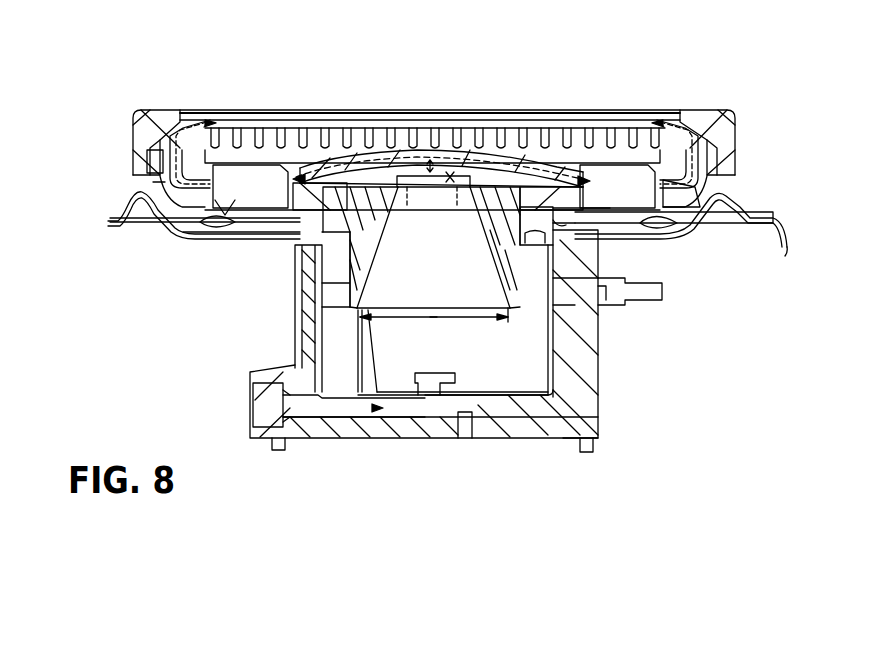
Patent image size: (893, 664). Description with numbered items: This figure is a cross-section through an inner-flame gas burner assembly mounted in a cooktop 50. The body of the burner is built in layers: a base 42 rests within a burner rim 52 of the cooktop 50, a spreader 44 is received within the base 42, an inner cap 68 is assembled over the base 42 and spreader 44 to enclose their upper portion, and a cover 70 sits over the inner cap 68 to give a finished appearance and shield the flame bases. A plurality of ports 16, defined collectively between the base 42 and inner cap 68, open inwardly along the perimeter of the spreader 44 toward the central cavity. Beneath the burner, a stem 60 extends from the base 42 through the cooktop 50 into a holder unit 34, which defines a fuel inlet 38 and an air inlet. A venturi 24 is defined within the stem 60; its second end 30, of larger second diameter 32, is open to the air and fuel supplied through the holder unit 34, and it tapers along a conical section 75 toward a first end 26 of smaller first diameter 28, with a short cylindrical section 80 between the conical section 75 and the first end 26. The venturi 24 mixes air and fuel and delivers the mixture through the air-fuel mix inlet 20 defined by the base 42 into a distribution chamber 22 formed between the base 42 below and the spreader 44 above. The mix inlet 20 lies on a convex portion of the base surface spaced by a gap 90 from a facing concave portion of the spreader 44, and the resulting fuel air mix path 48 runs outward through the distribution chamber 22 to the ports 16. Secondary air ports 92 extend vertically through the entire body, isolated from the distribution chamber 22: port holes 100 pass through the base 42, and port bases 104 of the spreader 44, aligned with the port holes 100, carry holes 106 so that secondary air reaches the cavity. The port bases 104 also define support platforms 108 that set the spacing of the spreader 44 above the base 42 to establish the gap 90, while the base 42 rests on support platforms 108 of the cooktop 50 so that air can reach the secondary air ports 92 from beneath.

The ports 16 is at (356, 130).
The air-fuel mix inlet 20 is at (452, 176).
The distribution chamber 22 is at (300, 242).
The venturi 24 is at (370, 290).
The first end 26 is at (402, 194).
The first diameter 28 is at (446, 188).
The second end 30 is at (428, 326).
The second diameter 32 is at (447, 312).
The holder unit 34 is at (530, 410).
The fuel inlet 38 is at (360, 422).
The base 42 is at (165, 182).
The spreader 44 is at (365, 160).
The fuel air mix path 48 is at (172, 132).
The cooktop 50 is at (784, 244).
The burner rim 52 is at (742, 214).
The stem 60 is at (560, 265).
The inner cap 68 is at (162, 145).
The cover 70 is at (240, 118).
The conical section 75 is at (442, 282).
The cylindrical section 80 is at (420, 176).
The gap 90 is at (436, 172).
The secondary air ports 92 is at (265, 190).
The port holes 100 is at (197, 218).
The port bases 104 is at (700, 160).
The holes 106 is at (652, 120).
The support platforms 108 is at (225, 228).